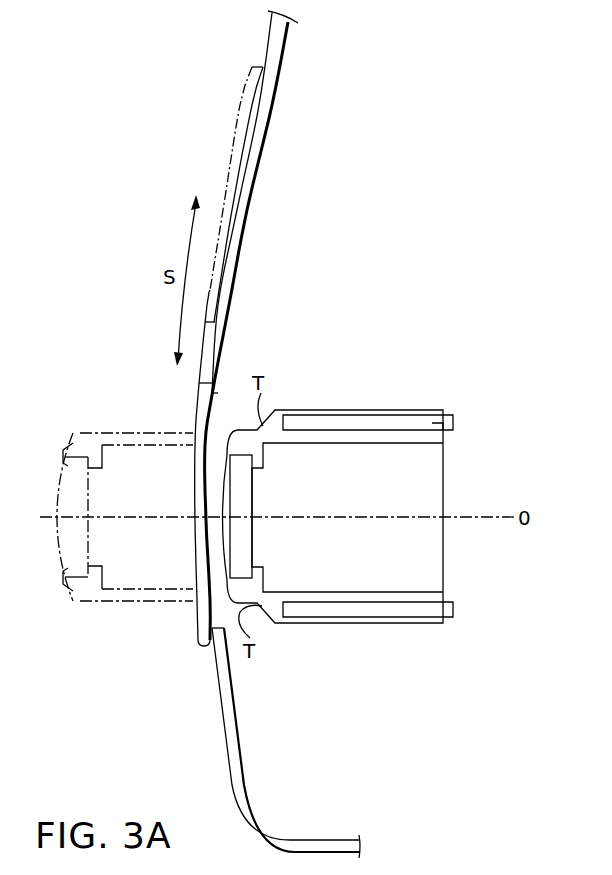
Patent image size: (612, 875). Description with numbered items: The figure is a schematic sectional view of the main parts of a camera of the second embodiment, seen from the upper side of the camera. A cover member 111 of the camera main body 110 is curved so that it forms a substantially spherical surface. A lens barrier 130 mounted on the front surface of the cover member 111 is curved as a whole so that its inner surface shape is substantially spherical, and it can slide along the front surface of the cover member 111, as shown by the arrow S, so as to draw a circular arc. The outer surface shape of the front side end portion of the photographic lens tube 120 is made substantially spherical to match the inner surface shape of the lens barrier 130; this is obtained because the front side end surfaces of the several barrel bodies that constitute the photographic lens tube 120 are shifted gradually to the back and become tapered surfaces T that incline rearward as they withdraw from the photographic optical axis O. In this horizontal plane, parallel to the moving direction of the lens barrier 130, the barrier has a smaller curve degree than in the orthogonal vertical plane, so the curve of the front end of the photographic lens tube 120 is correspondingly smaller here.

The camera main body 110 is at (348, 186).
The cover member 111 is at (223, 743).
The photographic lens tube 120 is at (441, 378).
The lens barrier 130 is at (197, 620).